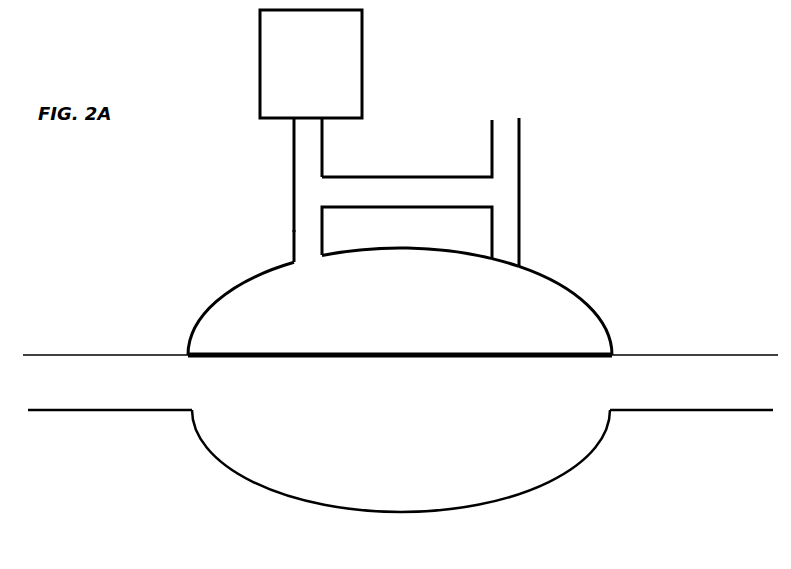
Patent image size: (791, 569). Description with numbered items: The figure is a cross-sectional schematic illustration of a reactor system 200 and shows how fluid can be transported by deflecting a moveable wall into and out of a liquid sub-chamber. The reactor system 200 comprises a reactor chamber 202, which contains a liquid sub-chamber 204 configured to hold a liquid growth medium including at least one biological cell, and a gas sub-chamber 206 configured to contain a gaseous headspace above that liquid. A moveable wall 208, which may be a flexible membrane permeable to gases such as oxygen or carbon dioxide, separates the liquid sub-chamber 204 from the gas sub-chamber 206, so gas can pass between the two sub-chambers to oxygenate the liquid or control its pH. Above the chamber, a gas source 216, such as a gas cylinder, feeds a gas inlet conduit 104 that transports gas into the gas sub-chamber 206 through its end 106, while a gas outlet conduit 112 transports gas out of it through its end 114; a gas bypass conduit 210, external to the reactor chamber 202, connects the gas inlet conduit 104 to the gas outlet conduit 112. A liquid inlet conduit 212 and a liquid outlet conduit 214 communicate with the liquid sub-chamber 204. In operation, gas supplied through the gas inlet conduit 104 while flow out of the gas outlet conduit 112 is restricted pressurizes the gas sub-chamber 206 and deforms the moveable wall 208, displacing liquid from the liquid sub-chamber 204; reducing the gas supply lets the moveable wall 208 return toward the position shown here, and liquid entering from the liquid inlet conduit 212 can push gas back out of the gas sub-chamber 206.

The reactor system 200 is at (34, 283).
The gas source 216 is at (294, 74).
The gas inlet conduit 104 is at (305, 162).
The tube outlet 106 is at (307, 260).
The gas bypass conduit 210 is at (410, 192).
The gas outlet conduit 112 is at (507, 157).
The outer tube end 114 is at (504, 265).
The reactor chamber 202 is at (220, 302).
The gas sub-chamber 206 is at (372, 314).
The moveable wall 208 is at (540, 352).
The liquid inlet conduit 212 is at (64, 389).
The liquid outlet conduit 214 is at (672, 389).
The liquid sub-chamber 204 is at (372, 432).